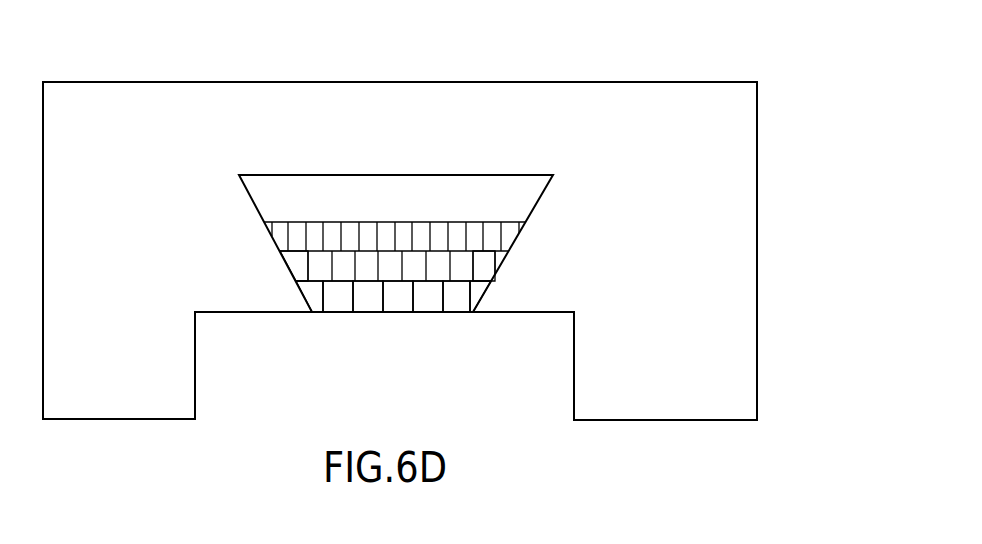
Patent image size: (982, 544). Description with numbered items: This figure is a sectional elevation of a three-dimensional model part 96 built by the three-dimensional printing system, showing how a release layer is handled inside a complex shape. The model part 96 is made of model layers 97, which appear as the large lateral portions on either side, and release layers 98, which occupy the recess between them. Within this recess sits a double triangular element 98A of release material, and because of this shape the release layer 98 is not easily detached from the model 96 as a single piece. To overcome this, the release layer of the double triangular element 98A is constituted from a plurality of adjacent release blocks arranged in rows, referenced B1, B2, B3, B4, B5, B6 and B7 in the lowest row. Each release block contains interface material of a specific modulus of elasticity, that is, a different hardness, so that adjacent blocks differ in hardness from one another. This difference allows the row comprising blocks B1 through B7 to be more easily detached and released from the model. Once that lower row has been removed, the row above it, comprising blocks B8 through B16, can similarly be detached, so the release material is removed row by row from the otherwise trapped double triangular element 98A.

The 3D model part 96 is at (730, 132).
The model layers 97 is at (178, 266).
The release layers 98 is at (435, 415).
The double triangular element 98A is at (468, 190).
The release block B1 is at (313, 297).
The release block B2 is at (340, 305).
The release block B3 is at (368, 304).
The release block B4 is at (400, 307).
The release block B5 is at (428, 303).
The release block B6 is at (457, 305).
The release block B7 is at (478, 294).
The release block B8 is at (300, 265).
The release block B16 is at (485, 265).